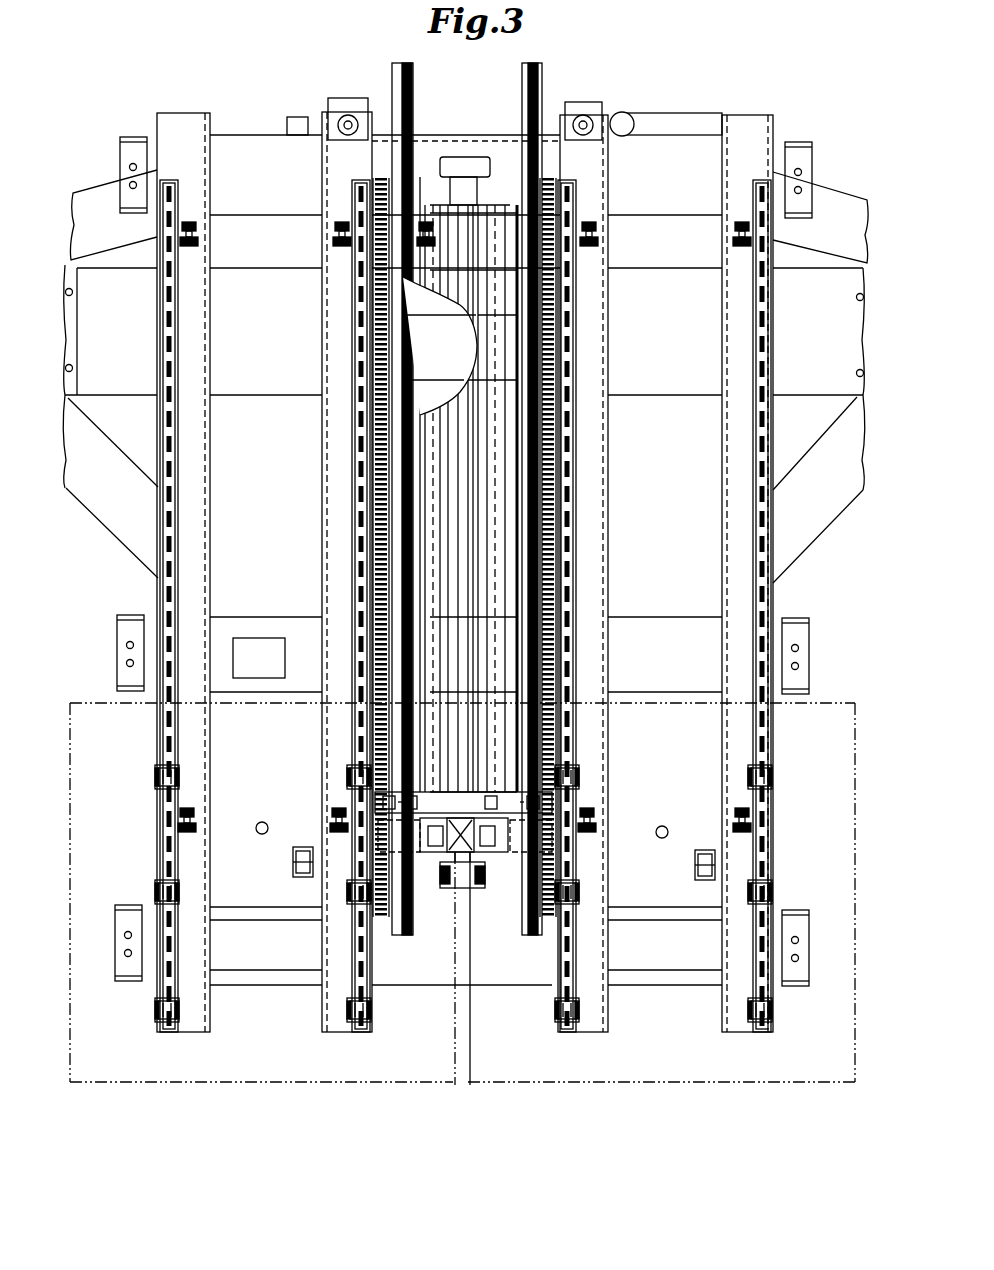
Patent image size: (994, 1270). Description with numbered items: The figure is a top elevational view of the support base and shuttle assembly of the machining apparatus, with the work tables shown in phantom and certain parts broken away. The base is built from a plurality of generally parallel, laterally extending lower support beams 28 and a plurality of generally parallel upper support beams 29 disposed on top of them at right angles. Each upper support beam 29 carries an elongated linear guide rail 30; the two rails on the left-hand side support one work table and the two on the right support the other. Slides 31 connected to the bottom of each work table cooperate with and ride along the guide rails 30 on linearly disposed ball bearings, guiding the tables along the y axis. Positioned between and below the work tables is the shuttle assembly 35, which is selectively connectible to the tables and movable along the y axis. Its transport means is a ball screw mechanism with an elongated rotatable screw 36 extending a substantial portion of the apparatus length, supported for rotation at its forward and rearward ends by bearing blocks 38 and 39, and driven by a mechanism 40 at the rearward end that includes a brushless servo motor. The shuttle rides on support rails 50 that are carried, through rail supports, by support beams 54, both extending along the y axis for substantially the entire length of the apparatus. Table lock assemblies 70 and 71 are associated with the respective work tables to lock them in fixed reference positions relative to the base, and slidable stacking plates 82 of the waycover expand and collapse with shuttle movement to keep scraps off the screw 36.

The lower support beams 28 is at (132, 150).
The upper support beams 29 is at (172, 478).
The linear guide rail 30 is at (353, 622).
The slides 31 is at (348, 772).
The shuttle assembly 35 is at (458, 815).
The screw 36 is at (537, 195).
The bearing block 38 is at (458, 880).
The bearing block 39 is at (433, 177).
The mechanism 40 is at (467, 167).
The support rails 50 is at (370, 440).
The support beams 54 is at (415, 488).
The table lock assembly 70 is at (292, 848).
The table lock assembly 71 is at (697, 862).
The stacking plates 82 is at (417, 352).